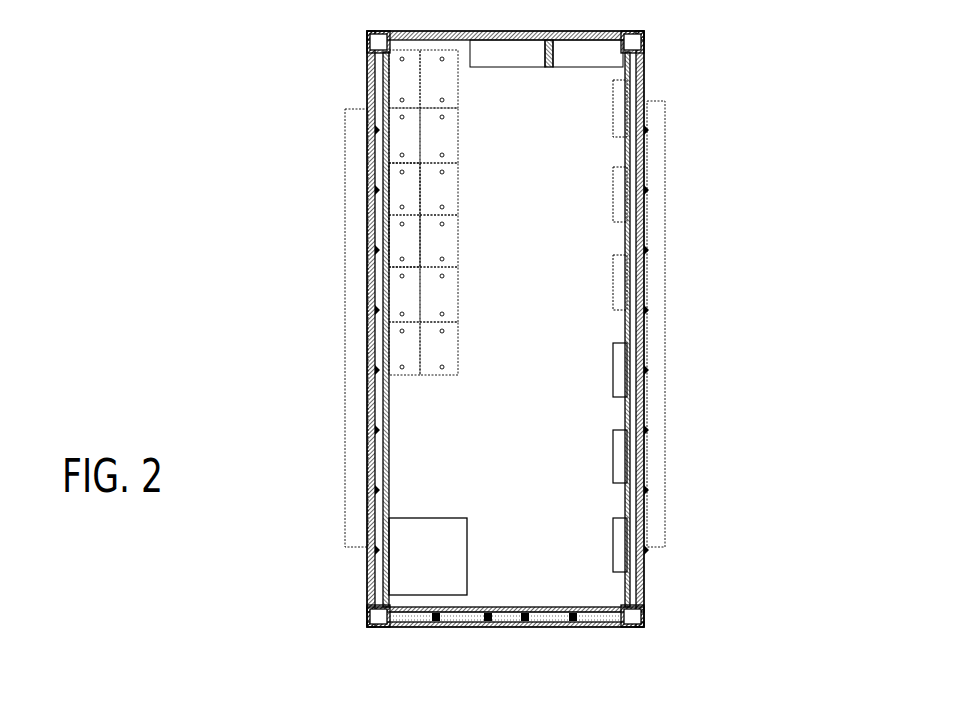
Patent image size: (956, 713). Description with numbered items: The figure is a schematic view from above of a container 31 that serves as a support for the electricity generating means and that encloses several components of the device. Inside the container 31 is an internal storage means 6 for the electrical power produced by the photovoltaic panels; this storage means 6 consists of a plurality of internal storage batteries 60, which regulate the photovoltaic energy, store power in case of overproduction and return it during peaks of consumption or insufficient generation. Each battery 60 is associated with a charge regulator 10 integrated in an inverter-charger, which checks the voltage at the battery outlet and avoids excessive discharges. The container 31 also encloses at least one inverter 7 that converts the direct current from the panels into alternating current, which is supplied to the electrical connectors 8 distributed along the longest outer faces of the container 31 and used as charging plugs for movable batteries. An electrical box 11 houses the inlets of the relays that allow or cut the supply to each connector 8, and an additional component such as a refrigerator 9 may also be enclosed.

The container 31 is at (652, 593).
The electrical box 11 is at (607, 55).
The electrical connector 8 is at (347, 320).
The internal storage means 6 is at (418, 88).
The internal storage battery 60 is at (400, 193).
The inverter 7 is at (621, 104).
The charge regulator 10 is at (622, 452).
The refrigerator 9 is at (400, 557).